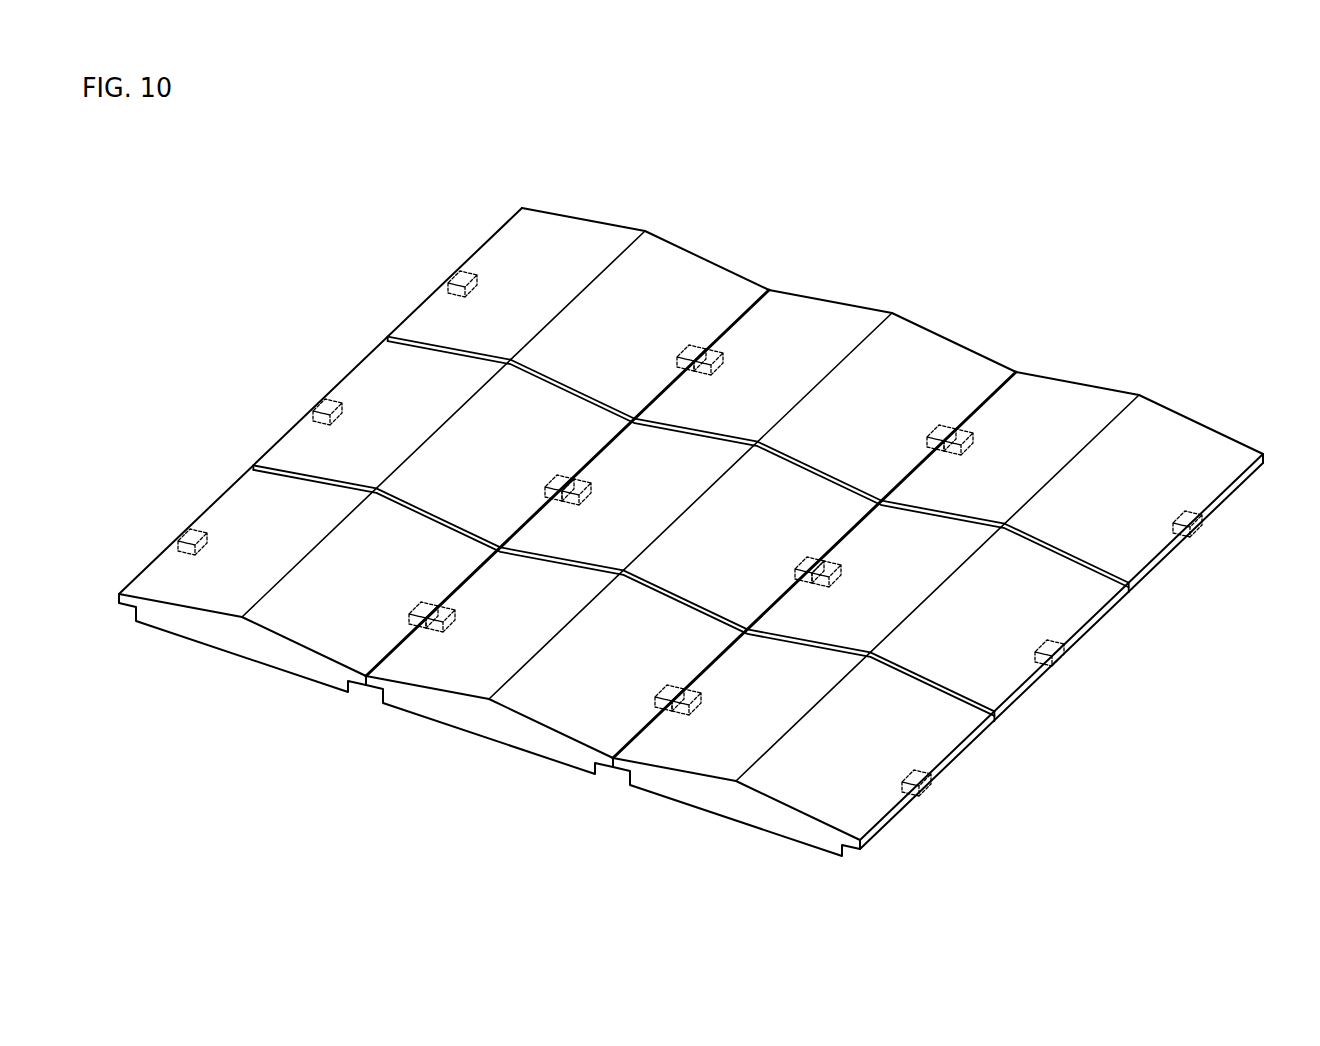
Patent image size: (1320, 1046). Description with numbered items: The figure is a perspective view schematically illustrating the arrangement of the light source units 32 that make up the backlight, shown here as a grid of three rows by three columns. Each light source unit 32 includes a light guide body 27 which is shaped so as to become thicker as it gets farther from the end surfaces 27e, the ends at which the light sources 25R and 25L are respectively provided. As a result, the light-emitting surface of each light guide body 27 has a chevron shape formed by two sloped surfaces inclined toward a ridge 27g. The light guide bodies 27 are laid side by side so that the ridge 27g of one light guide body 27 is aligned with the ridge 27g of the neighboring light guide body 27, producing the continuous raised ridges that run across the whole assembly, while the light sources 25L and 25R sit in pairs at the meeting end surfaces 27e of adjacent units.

The light source 25L is at (973, 440).
The light source 25R is at (1180, 512).
The light guide body 27 is at (1213, 440).
The end surface 27e is at (1270, 452).
The ridge 27g is at (1137, 397).
The light source unit 32 is at (1097, 375).